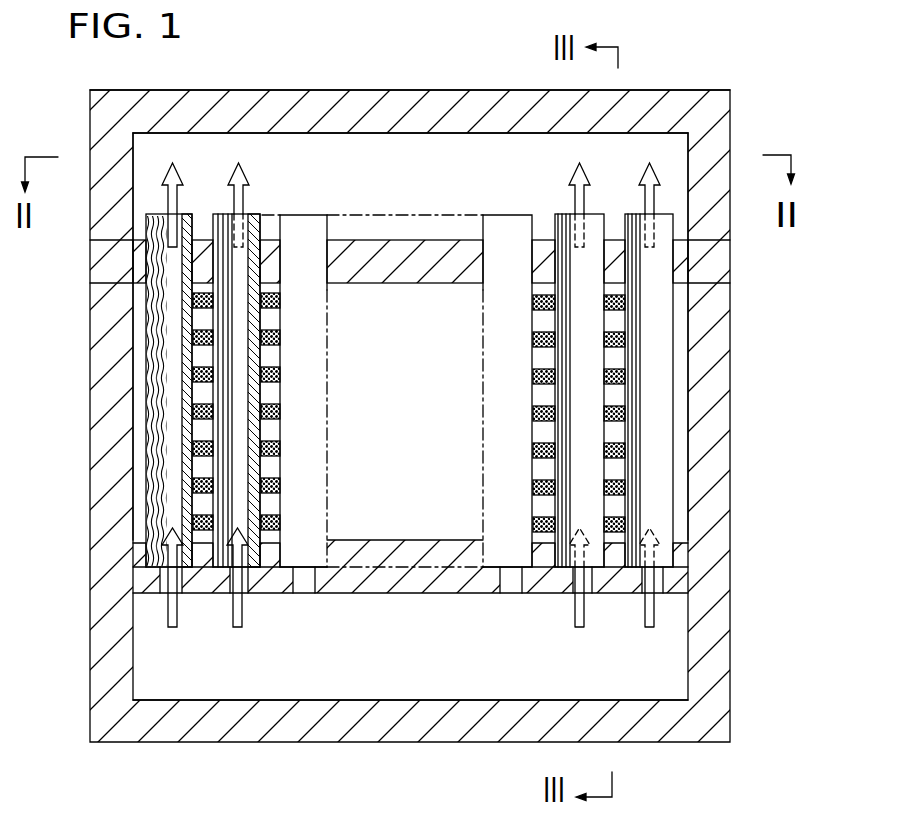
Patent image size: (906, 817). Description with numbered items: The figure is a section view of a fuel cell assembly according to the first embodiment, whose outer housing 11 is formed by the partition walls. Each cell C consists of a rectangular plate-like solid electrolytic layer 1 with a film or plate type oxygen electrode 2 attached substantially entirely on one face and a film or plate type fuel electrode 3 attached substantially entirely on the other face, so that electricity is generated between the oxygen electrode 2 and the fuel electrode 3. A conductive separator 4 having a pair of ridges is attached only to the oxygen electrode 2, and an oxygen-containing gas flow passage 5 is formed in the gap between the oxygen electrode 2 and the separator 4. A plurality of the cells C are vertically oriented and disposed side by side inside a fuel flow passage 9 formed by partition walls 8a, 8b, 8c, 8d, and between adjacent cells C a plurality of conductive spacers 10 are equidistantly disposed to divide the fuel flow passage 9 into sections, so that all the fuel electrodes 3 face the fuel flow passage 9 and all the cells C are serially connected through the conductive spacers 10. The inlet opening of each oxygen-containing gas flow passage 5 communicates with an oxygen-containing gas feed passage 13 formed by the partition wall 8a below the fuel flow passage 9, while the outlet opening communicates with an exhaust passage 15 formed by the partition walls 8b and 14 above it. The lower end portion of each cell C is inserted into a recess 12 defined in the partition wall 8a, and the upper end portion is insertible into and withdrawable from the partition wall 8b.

The solid electrolytic layer 1 is at (143, 405).
The oxygen electrode 2 is at (148, 500).
The fuel electrode 3 is at (145, 427).
The conductive separator 4 is at (192, 555).
The oxygen-containing gas flow passage 5 is at (238, 627).
The partition wall 8a is at (418, 593).
The partition wall 8b is at (424, 283).
The partition wall 8c is at (93, 353).
The partition wall 8d is at (730, 386).
The fuel flow passage 9 is at (372, 391).
The conductive spacers 10 is at (279, 337).
The housing 11 is at (424, 742).
The recess 12 is at (287, 562).
The oxygen-containing gas feed passage 13 is at (410, 675).
The partition wall 14 is at (414, 90).
The exhaust passage 15 is at (410, 164).
The cell C is at (250, 208).